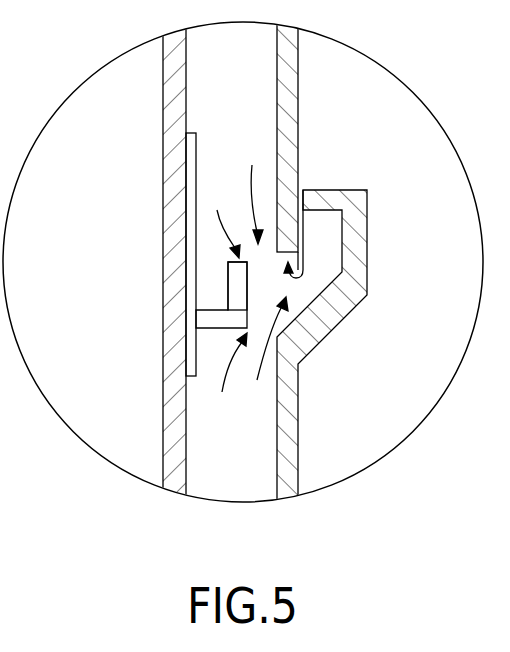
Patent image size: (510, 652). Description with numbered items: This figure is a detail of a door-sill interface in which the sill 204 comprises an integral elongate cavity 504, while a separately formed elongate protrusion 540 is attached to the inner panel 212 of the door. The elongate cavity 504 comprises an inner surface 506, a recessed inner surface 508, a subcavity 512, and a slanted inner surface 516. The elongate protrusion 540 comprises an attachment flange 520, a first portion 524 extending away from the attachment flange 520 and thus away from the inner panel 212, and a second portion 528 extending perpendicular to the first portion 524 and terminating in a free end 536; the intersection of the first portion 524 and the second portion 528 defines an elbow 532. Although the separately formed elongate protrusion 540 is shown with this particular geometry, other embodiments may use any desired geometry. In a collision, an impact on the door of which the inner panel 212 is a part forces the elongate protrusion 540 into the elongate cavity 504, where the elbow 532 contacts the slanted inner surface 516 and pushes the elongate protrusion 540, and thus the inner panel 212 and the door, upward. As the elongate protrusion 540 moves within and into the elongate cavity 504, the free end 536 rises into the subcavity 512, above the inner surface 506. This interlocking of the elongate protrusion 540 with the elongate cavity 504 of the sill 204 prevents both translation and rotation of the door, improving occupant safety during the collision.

The sill 204 is at (284, 64).
The inner panel 212 is at (175, 69).
The elongate cavity 504 is at (262, 354).
The inner surface 506 is at (304, 190).
The recessed inner surface 508 is at (324, 234).
The subcavity 512 is at (327, 253).
The slanted inner surface 516 is at (307, 284).
The attachment flange 520 is at (191, 177).
The first portion 524 is at (216, 318).
The second portion 528 is at (235, 294).
The elbow 532 is at (222, 390).
The free end 536 is at (221, 218).
The elongate protrusion 540 is at (253, 189).